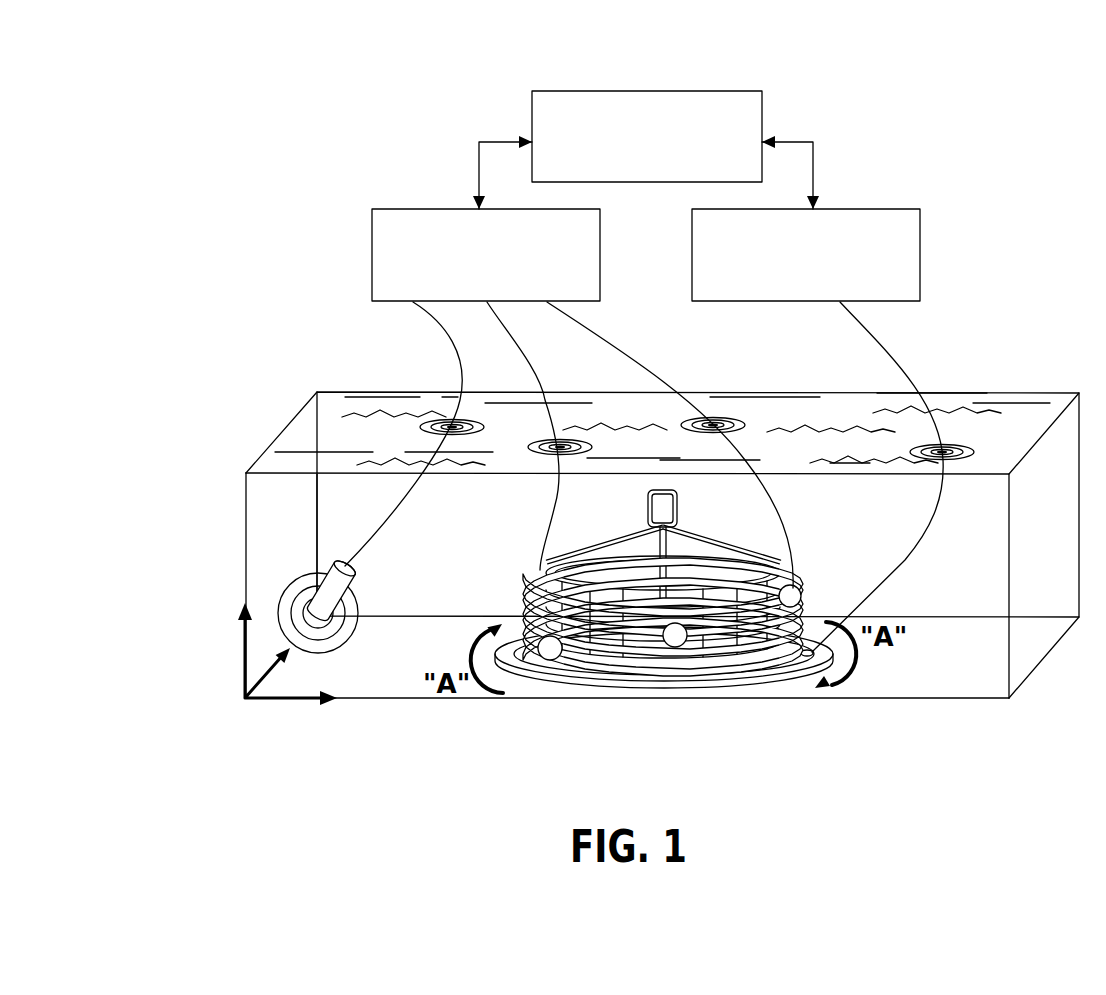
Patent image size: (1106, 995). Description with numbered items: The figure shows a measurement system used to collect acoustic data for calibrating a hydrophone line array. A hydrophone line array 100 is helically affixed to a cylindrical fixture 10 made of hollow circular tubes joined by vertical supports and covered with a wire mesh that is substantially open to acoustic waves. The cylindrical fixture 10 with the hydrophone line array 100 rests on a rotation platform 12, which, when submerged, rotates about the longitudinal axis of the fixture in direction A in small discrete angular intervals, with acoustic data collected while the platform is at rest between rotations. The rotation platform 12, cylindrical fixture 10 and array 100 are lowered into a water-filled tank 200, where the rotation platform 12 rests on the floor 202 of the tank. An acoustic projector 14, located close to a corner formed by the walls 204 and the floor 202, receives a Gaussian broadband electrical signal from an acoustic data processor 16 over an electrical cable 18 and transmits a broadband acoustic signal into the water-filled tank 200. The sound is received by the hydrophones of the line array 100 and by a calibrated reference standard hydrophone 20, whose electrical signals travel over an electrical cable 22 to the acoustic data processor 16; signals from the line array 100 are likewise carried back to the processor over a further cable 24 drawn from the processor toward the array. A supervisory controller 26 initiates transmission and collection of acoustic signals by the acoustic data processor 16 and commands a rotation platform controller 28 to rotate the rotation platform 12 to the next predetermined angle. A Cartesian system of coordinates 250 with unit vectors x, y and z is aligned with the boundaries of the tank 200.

The supervisory controller 26 is at (710, 91).
The rotation platform controller 28 is at (912, 209).
The acoustic data processor 16 is at (372, 247).
The electrical cable 18 is at (427, 315).
The sensor array cable 24 is at (498, 323).
The electrical cable 22 is at (602, 337).
The water-filled tank 200 is at (983, 372).
The walls 204 is at (246, 548).
The floor 202 is at (997, 658).
The rotation platform 12 is at (817, 690).
The cylindrical fixture 10 is at (688, 532).
The hydrophone line array 100 is at (528, 576).
The calibrated reference standard hydrophone 20 is at (800, 589).
The acoustic projector 14 is at (357, 571).
The Cartesian system of coordinates 250 is at (282, 722).